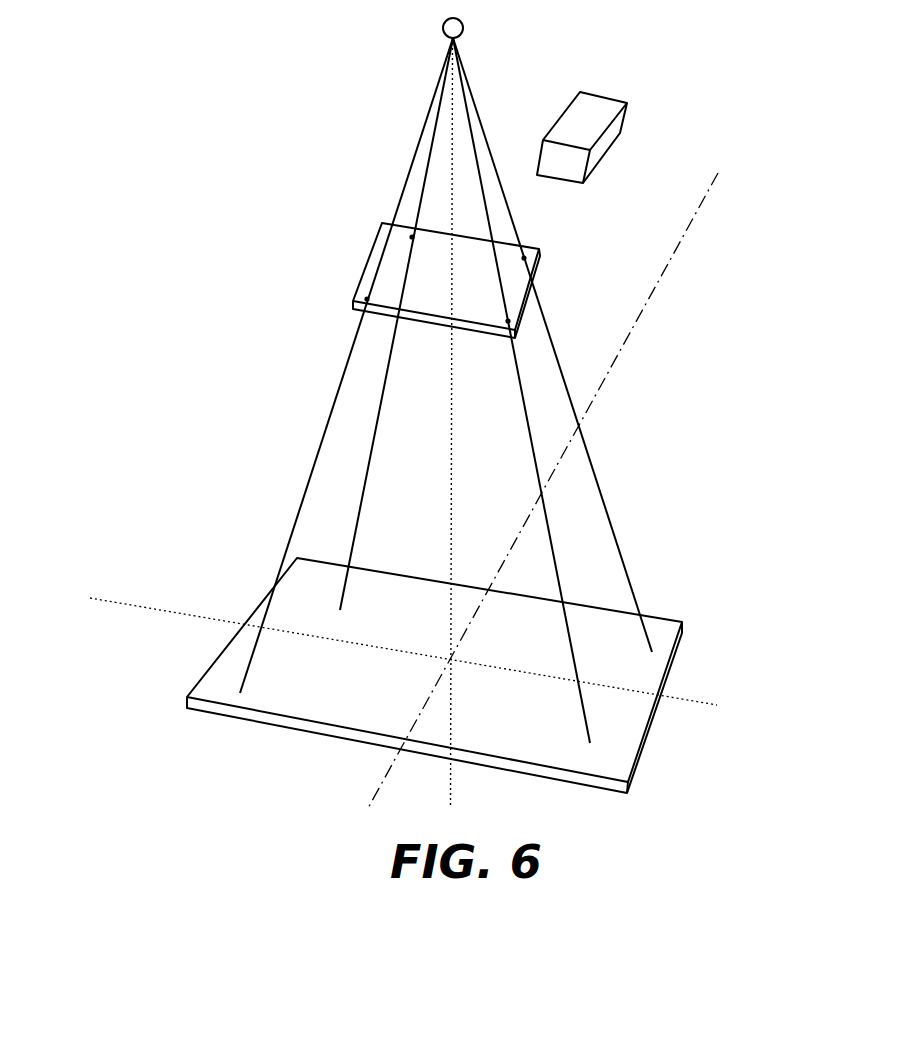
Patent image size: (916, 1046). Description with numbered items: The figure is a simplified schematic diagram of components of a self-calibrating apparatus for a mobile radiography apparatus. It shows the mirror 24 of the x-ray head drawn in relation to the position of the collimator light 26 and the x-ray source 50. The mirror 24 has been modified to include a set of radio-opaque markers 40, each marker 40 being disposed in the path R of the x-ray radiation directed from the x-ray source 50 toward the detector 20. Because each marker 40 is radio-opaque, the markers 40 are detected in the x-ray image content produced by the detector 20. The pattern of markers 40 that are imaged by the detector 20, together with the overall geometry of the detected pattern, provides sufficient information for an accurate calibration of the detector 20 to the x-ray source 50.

The x-ray source 50 is at (463, 30).
The collimator light 26 is at (612, 147).
The mirror 24 is at (540, 277).
The radio-opaque markers 40 is at (508, 321).
The detector 20 is at (667, 670).
The path of the x-ray radiation R is at (450, 535).